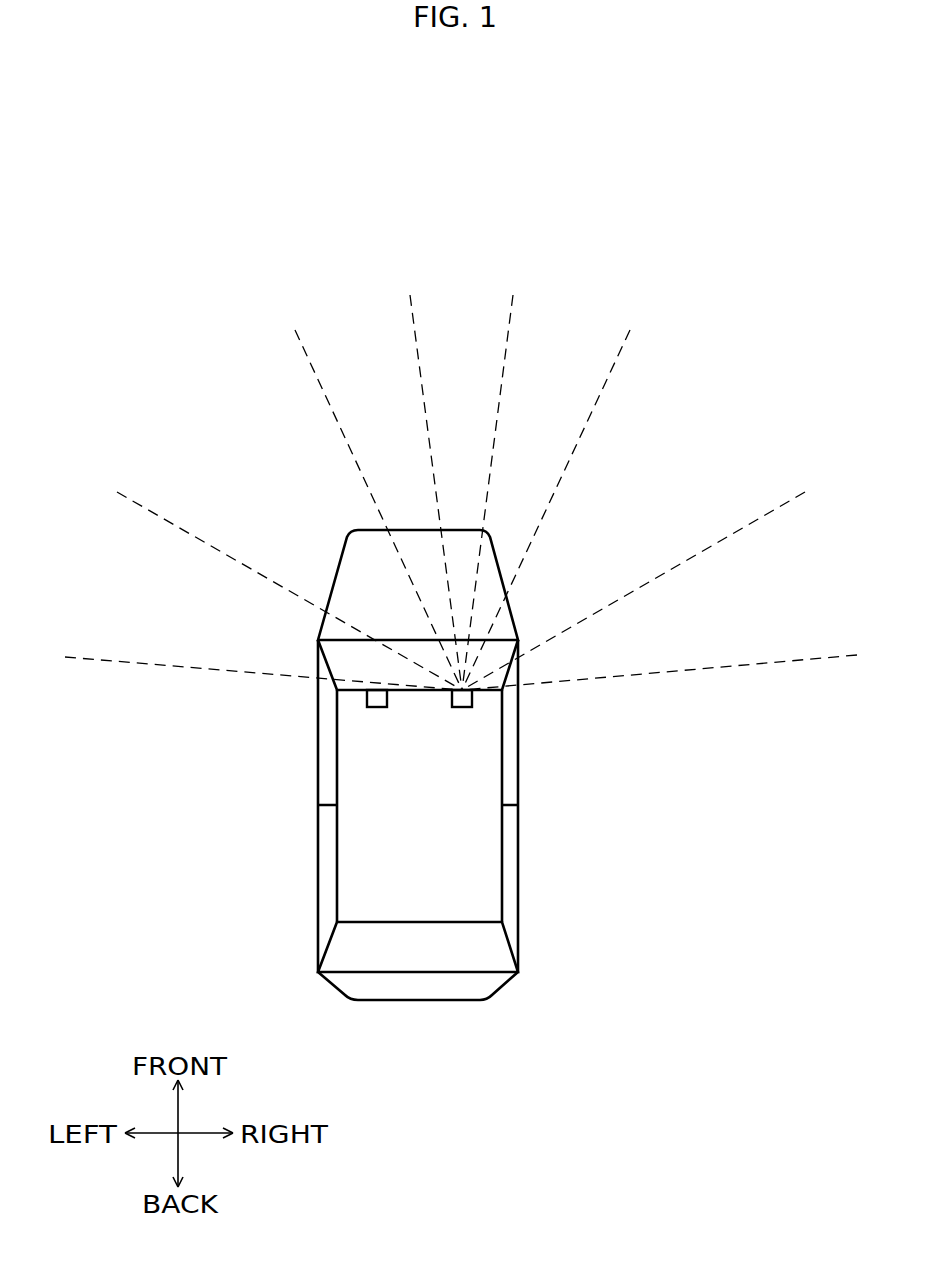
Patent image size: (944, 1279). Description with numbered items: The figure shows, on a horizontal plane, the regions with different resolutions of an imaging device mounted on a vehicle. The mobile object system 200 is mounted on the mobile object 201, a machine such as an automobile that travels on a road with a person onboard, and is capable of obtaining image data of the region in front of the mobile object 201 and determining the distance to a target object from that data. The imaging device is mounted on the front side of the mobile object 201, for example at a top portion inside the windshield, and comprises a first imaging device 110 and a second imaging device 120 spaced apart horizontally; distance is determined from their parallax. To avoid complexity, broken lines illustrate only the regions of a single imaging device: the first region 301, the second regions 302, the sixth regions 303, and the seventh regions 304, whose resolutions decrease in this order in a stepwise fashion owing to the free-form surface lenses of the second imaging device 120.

The mobile object system 200 is at (595, 159).
The mobile object 201 is at (433, 830).
The first imaging device 110 is at (378, 707).
The second imaging device 120 is at (465, 707).
The first region 301 is at (475, 368).
The second regions 302 is at (397, 407).
The sixth regions 303 is at (289, 494).
The seventh regions 304 is at (195, 620).